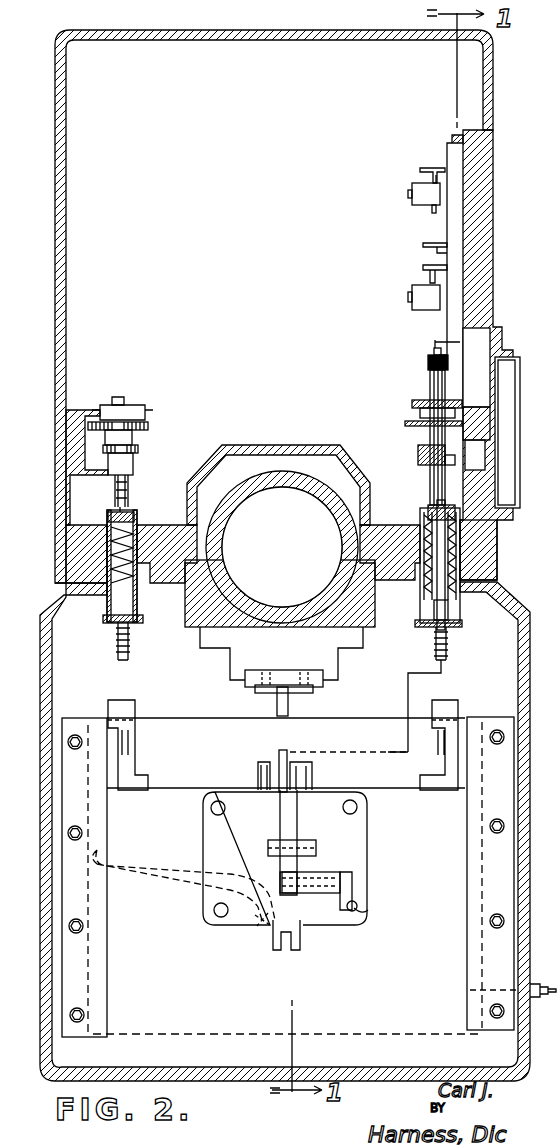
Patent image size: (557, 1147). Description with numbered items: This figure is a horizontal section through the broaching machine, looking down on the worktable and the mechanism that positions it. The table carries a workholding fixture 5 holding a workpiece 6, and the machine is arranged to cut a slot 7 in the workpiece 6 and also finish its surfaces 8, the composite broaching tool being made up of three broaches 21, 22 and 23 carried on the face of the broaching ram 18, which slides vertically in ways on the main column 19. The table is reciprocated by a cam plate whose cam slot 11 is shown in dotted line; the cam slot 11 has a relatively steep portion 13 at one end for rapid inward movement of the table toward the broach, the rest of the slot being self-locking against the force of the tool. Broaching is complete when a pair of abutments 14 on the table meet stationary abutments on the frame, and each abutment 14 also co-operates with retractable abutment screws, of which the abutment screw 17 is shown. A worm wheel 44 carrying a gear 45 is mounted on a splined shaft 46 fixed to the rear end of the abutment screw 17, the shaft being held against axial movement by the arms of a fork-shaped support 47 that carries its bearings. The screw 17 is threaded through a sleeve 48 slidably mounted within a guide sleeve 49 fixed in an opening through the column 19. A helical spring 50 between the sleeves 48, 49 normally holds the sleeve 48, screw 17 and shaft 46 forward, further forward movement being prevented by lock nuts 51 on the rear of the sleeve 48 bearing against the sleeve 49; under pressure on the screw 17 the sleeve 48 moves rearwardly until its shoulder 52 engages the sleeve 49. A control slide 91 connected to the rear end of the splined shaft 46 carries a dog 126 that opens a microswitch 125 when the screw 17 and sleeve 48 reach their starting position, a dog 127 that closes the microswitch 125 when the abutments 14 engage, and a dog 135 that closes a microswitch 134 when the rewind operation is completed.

The workholding fixture 5 is at (346, 846).
The workpiece 6 is at (313, 775).
The slot 7 is at (284, 763).
The surfaces 8 is at (262, 762).
The cam slot 11 is at (167, 878).
The steep portion 13 is at (264, 921).
The abutments 14 is at (108, 703).
The abutment screw 17 is at (128, 650).
The broaching ram 18 is at (195, 617).
The main column 19 is at (160, 527).
The broach 21 is at (262, 688).
The broach 22 is at (290, 714).
The broach 23 is at (313, 693).
The worm wheel 44 is at (418, 422).
The gear 45 is at (425, 460).
The splined shaft 46 is at (430, 486).
The fork-shaped support 47 is at (476, 462).
The sleeve 48 is at (497, 566).
The guide sleeve 49 is at (498, 548).
The helical spring 50 is at (500, 530).
The lock nuts 51 is at (445, 512).
The shoulder 52 is at (455, 618).
The control slide 91 is at (447, 222).
The microswitch 125 is at (410, 198).
The dog 126 is at (428, 167).
The dog 127 is at (425, 244).
The microswitch 134 is at (410, 300).
The dog 135 is at (424, 267).